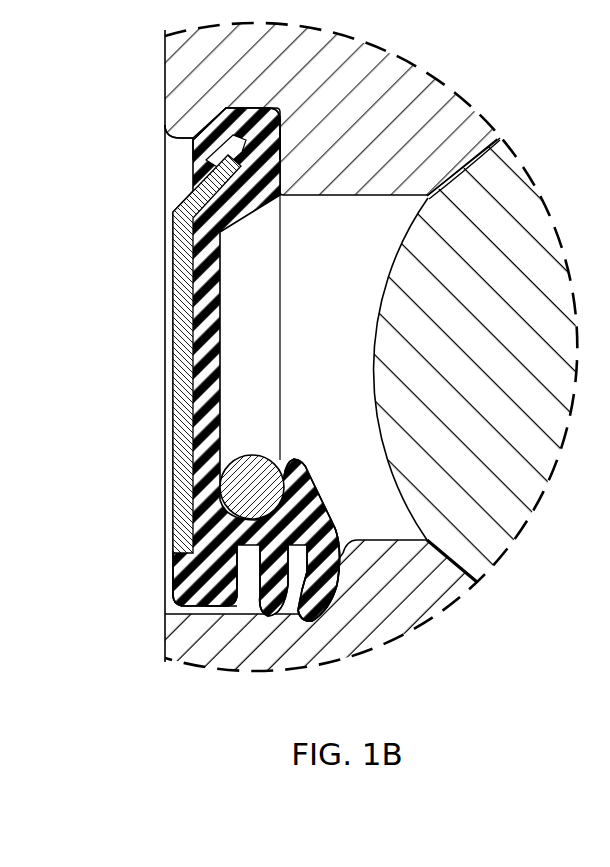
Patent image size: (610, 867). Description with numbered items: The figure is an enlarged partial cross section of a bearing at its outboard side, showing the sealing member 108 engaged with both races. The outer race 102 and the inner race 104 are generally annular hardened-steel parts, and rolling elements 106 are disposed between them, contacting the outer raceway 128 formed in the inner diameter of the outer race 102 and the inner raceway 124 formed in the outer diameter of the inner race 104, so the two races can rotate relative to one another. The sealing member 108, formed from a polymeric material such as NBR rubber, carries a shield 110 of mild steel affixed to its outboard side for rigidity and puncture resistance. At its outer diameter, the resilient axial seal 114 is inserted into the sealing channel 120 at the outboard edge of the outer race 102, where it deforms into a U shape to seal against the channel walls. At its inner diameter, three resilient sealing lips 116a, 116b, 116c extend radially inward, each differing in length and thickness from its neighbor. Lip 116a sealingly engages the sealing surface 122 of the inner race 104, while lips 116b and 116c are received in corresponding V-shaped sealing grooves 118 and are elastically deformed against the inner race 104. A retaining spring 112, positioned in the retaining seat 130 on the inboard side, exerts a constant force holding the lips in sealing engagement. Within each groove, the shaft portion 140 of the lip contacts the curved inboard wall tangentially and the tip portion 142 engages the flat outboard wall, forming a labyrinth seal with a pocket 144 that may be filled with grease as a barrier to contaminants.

The outer race 102 is at (341, 196).
The inner race 104 is at (416, 543).
The rolling elements 106 is at (508, 180).
The sealing member 108 is at (138, 200).
The shield 110 is at (173, 267).
The retaining spring 112 is at (252, 455).
The resilient axial seal 114 is at (192, 143).
The resilient sealing lip 116a is at (170, 573).
The resilient sealing lip 116b is at (246, 579).
The resilient sealing lip 116c is at (309, 565).
The sealing grooves 118 is at (229, 634).
The sealing channel 120 is at (278, 109).
The sealing surface 122 is at (176, 606).
The inner raceway 124 is at (462, 578).
The outer raceway 128 is at (473, 150).
The retaining seat 130 is at (299, 458).
The shaft portion 140 is at (242, 630).
The tip portion 142 is at (212, 606).
The pocket 144 is at (238, 636).